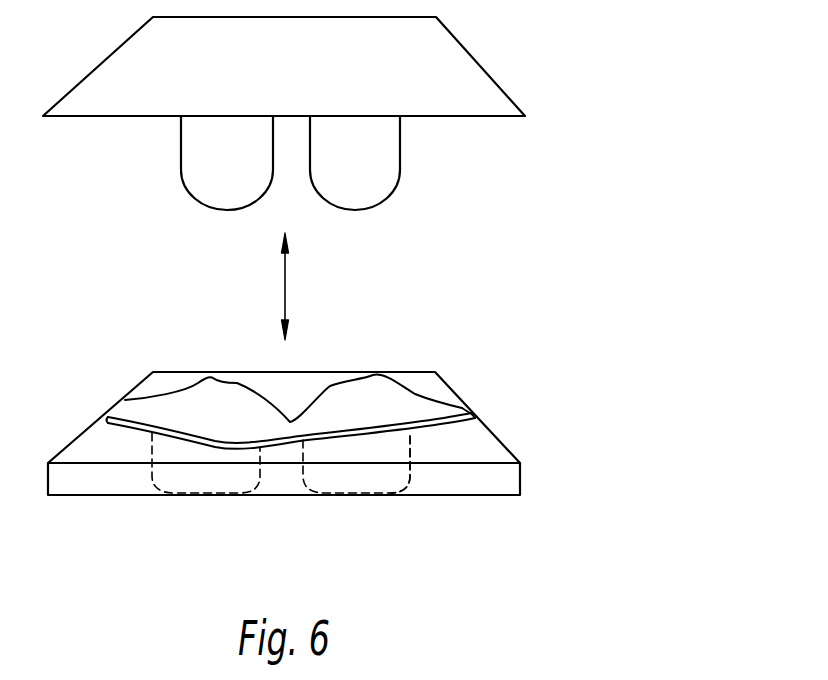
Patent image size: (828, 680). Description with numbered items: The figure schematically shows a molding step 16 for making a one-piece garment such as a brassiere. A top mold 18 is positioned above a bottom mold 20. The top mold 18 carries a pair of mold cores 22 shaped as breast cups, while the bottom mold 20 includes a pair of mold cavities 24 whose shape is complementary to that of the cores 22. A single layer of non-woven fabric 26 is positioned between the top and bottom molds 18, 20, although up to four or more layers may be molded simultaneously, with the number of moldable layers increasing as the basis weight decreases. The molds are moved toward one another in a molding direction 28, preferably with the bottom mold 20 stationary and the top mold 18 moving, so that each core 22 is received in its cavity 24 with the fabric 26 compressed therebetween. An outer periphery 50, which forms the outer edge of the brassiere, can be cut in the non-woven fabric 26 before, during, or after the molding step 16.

The molding step 16 is at (614, 184).
The top mold 18 is at (455, 75).
The bottom mold 20 is at (502, 438).
The mold core 22 is at (230, 161).
The mold cavity 24 is at (158, 482).
The non-woven fabric 26 is at (457, 408).
The molding direction 28 is at (285, 288).
The outer periphery 50 is at (410, 435).